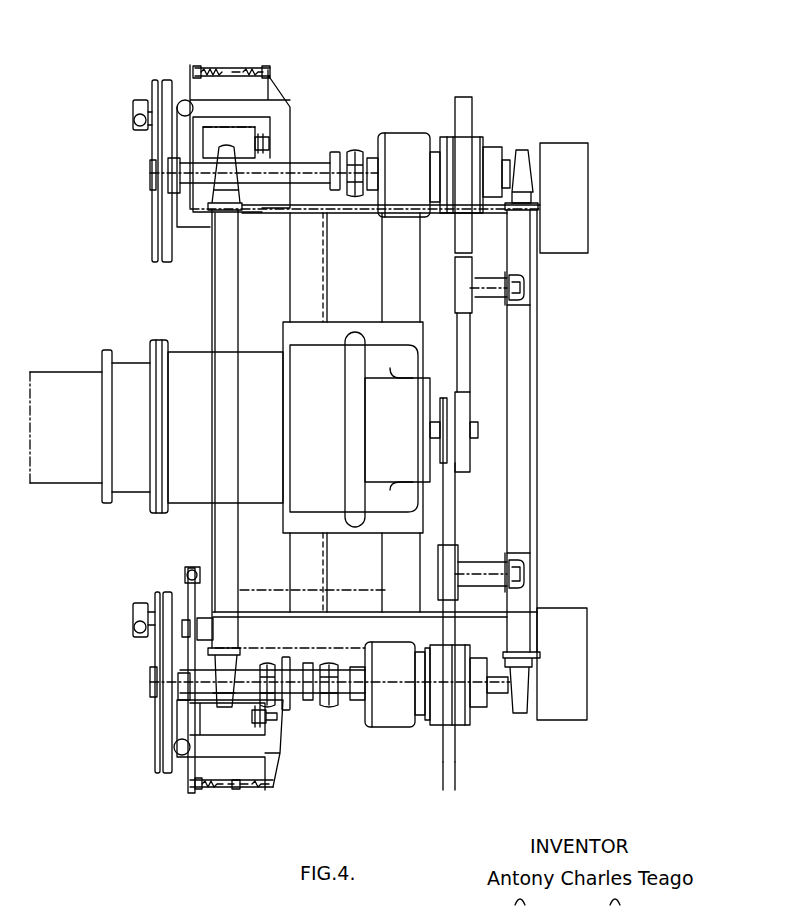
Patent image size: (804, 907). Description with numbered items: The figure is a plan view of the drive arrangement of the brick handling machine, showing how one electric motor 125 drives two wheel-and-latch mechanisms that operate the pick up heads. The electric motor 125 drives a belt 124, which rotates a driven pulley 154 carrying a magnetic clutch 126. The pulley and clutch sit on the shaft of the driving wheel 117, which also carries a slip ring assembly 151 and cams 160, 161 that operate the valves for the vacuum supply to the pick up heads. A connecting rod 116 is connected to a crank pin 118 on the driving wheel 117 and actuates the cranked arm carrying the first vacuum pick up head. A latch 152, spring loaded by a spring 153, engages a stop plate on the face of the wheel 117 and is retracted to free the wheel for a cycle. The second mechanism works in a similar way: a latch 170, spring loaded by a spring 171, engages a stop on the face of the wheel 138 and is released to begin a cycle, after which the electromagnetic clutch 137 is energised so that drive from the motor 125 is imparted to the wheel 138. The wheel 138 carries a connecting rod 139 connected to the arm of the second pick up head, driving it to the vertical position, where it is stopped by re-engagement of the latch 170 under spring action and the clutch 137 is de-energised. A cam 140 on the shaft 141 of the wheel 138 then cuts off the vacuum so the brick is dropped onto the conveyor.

The connecting rod 116 is at (135, 628).
The driving wheel 117 is at (165, 773).
The crank pin 118 is at (133, 610).
The belt 124 is at (452, 505).
The electric motor 125 is at (408, 380).
The magnetic clutch 126 is at (393, 722).
The electromagnetic clutch 137 is at (398, 138).
The wheel 138 is at (157, 238).
The connecting rod 139 is at (134, 122).
The cam 140 is at (332, 150).
The shaft 141 is at (293, 163).
The slip ring assembly 151 is at (552, 713).
The latch 152 is at (183, 775).
The spring 153 is at (238, 790).
The driven pulley 154 is at (445, 762).
The cam 160 is at (311, 698).
The cam 161 is at (287, 695).
The latch 170 is at (185, 92).
The spring 171 is at (242, 67).